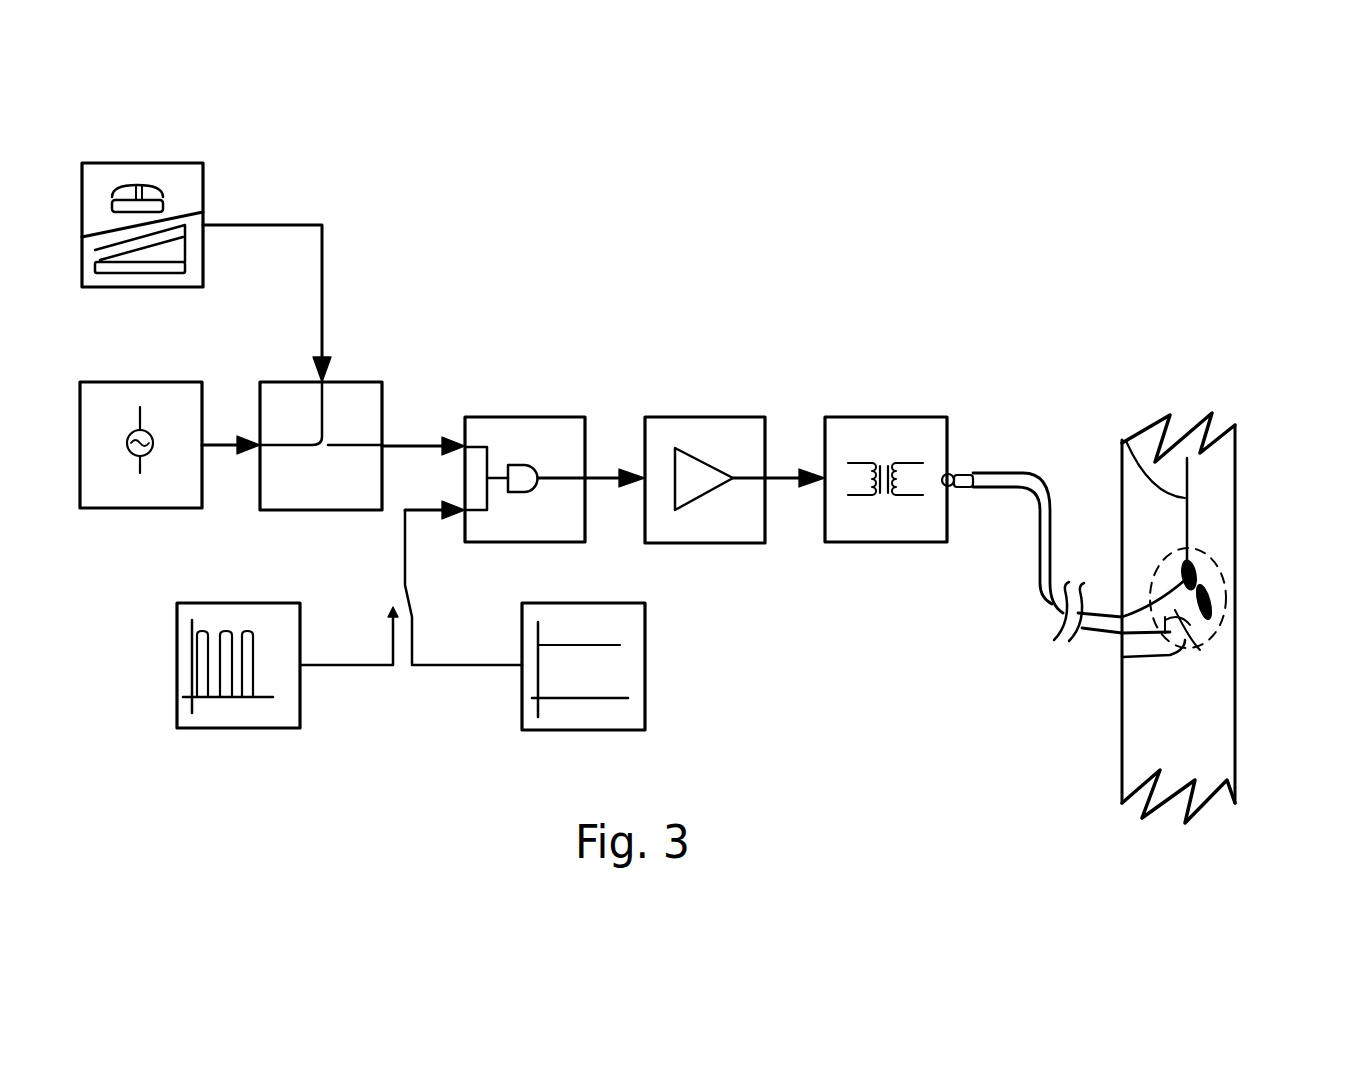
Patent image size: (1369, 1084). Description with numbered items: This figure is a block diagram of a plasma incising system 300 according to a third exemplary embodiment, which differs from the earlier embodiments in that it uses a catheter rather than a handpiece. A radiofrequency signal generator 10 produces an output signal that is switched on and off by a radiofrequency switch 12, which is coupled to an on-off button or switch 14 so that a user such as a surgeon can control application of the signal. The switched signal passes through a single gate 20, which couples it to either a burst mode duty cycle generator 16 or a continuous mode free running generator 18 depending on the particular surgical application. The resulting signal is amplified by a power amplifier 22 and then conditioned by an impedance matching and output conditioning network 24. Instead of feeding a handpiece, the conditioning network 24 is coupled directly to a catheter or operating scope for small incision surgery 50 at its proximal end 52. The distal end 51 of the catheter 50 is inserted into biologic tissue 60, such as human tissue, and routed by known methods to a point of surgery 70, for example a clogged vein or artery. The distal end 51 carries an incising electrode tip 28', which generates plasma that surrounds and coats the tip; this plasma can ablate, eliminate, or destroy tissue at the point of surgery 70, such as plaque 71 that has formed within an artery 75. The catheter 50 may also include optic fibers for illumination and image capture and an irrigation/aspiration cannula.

The plasma incising system 300 is at (690, 185).
The radiofrequency signal generator 10 is at (172, 380).
The radiofrequency switch 12 is at (353, 380).
The on-off button or switch 14 is at (197, 195).
The burst mode duty cycle generator 16 is at (272, 600).
The continuous mode free running generator 18 is at (617, 600).
The gate 20 is at (555, 413).
The power amplifier 22 is at (738, 413).
The conditioning network 24 is at (917, 417).
The incising electrode tip 28' is at (1128, 522).
The catheter 50 is at (1042, 600).
The distal end 51 is at (1193, 640).
The proximal end 52 is at (968, 504).
The biologic tissue 60 is at (1120, 740).
The point of surgery 70 is at (1225, 632).
The plaque 71 is at (1205, 575).
The artery 75 is at (1127, 440).